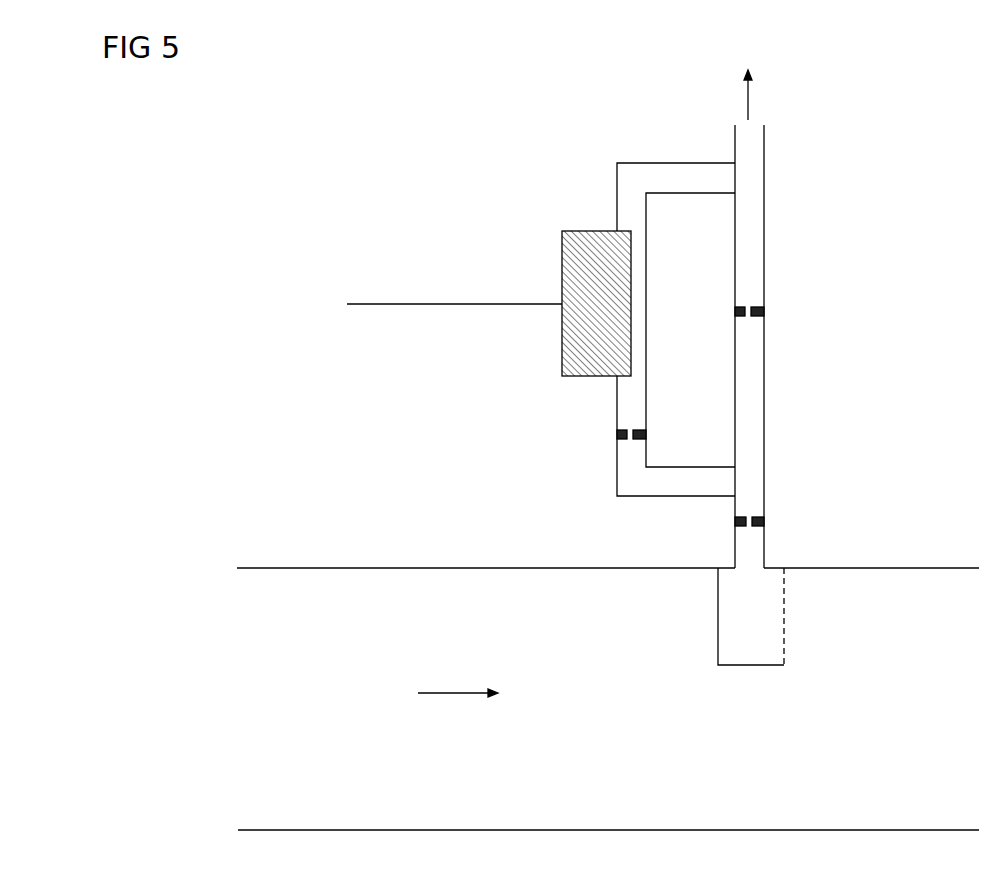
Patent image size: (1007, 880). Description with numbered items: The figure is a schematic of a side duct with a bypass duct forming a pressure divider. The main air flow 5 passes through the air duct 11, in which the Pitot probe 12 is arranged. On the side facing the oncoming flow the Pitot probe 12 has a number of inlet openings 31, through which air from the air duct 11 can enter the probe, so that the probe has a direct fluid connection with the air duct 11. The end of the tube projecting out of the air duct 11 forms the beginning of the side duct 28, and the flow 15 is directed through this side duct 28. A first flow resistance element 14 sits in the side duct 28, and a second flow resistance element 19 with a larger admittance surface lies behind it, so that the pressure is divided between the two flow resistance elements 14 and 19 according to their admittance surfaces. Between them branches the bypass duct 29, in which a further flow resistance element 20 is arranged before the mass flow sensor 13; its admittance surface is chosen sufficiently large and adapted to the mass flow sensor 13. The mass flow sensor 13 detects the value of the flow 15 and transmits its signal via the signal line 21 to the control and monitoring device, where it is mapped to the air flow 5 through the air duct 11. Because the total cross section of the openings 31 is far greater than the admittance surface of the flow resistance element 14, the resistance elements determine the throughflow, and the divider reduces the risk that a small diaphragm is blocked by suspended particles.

The air flow 5 is at (444, 691).
The air duct 11 is at (608, 551).
The Pitot probe 12 is at (751, 616).
The mass flow sensor 13 is at (579, 303).
The flow resistance element 14 is at (763, 520).
The flow in the side duct 15 is at (745, 82).
The second flow resistance element 19 is at (764, 309).
The flow resistance element 20 is at (614, 432).
The signal line 21 is at (454, 291).
The side duct 28 is at (764, 346).
The bypass duct 29 is at (690, 330).
The openings of the Pitot probe 31 is at (800, 616).